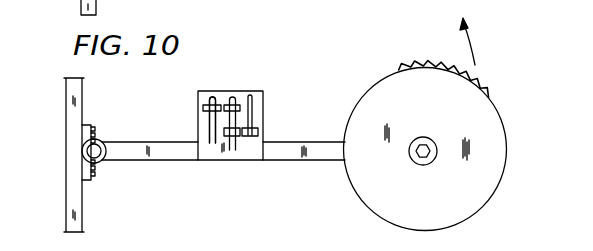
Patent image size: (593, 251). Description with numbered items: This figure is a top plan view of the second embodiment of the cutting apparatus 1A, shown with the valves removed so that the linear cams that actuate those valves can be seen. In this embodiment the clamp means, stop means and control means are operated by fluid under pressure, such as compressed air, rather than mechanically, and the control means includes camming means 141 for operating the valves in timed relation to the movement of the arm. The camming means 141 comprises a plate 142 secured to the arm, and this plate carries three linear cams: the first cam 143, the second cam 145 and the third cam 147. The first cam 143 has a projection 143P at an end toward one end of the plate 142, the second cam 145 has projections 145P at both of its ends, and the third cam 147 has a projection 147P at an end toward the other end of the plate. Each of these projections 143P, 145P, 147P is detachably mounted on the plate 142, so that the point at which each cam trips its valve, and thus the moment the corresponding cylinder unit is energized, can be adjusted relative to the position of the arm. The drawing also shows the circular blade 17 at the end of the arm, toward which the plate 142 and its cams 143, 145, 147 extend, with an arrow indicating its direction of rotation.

The cutting apparatus 1A is at (280, 84).
The saw blade 17 is at (490, 167).
The camming means 141 is at (264, 101).
The plate 142 is at (197, 120).
The first linear cam 143 is at (209, 140).
The projection 143P is at (204, 105).
The second linear cam 145 is at (227, 140).
The projections 145P is at (230, 92).
The third linear cam 147 is at (211, 92).
The projection 147P is at (255, 132).